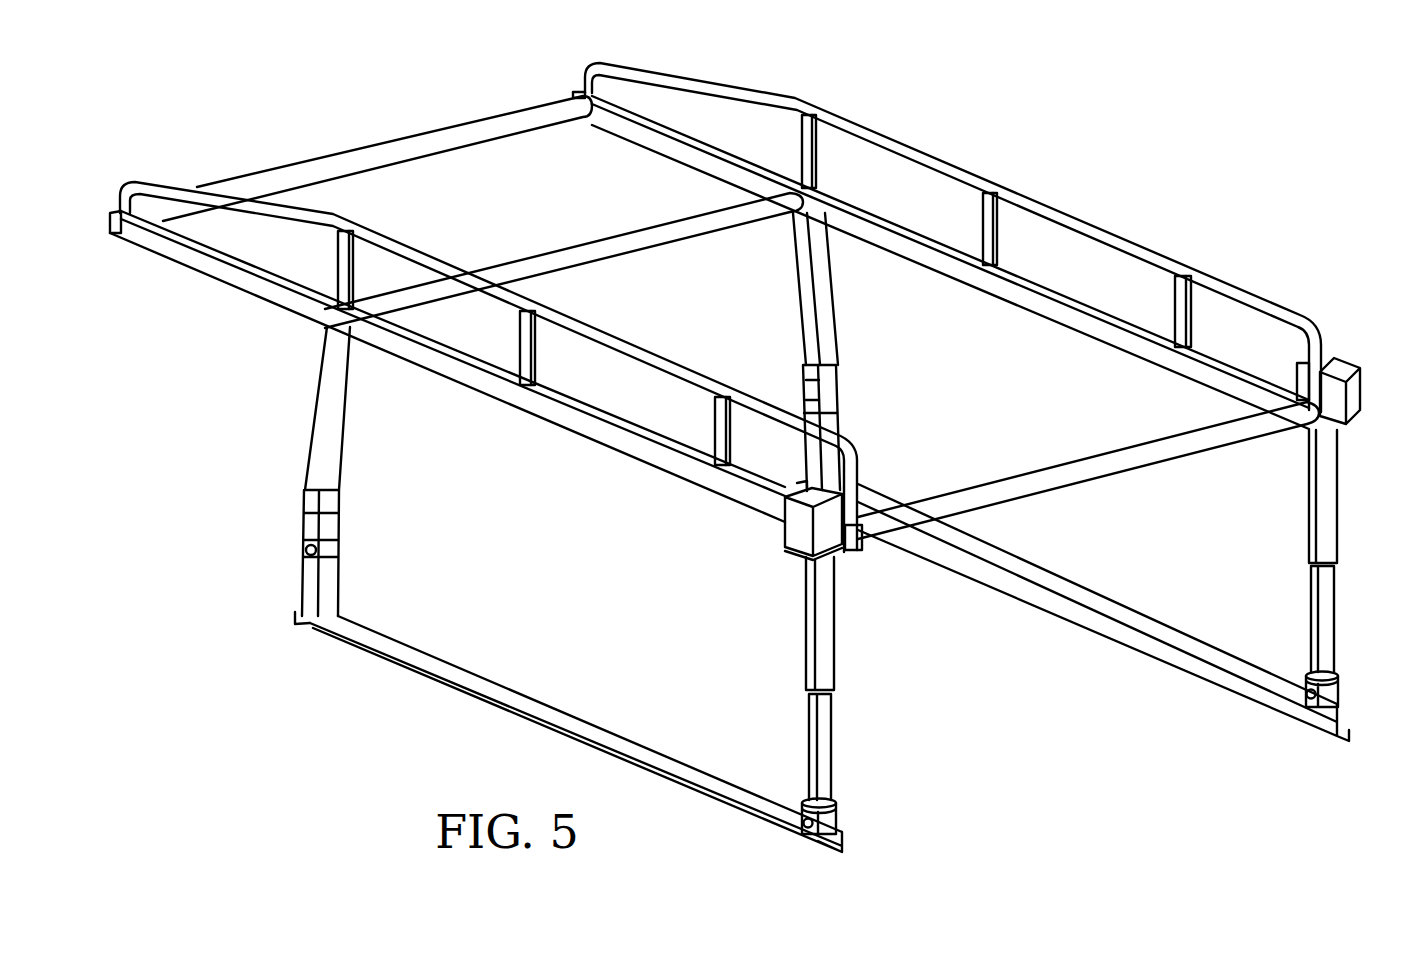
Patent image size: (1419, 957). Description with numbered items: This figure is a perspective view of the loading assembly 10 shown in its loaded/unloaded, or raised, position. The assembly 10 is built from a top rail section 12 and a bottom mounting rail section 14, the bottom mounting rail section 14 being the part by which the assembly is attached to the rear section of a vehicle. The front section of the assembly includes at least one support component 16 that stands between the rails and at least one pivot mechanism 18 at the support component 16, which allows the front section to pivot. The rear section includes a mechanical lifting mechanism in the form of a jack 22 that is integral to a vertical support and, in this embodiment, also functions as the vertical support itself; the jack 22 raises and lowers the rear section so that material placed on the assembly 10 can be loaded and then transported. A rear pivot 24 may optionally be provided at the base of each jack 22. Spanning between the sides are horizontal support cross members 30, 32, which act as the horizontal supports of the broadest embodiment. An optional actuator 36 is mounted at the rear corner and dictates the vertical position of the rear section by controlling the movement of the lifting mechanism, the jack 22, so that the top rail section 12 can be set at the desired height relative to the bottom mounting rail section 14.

The assembly 10 is at (1165, 144).
The top rail section 12 is at (905, 143).
The bottom mounting rail section 14 is at (527, 700).
The support component 16 is at (803, 326).
The pivot mechanism 18 is at (812, 400).
The jack 22 is at (832, 658).
The rear pivot 24 is at (800, 828).
The horizontal support/cross member 30 is at (400, 140).
The horizontal support/cross member 32 is at (1090, 462).
The actuator 36 is at (1375, 357).